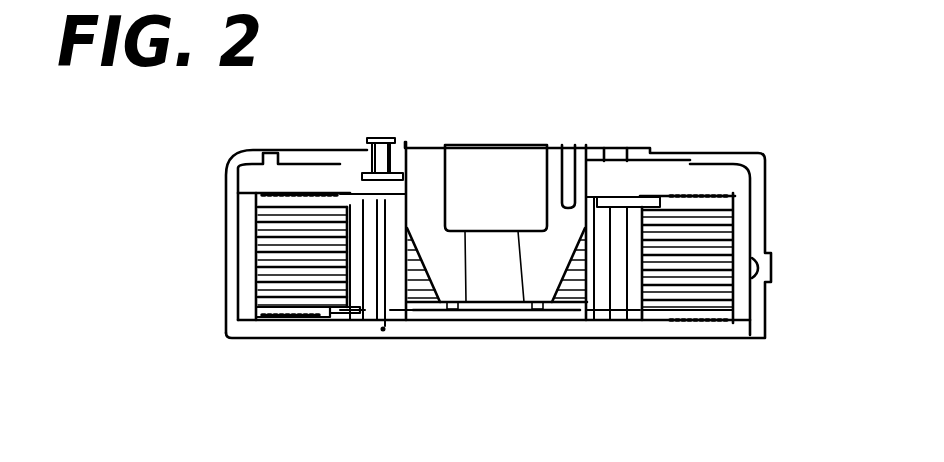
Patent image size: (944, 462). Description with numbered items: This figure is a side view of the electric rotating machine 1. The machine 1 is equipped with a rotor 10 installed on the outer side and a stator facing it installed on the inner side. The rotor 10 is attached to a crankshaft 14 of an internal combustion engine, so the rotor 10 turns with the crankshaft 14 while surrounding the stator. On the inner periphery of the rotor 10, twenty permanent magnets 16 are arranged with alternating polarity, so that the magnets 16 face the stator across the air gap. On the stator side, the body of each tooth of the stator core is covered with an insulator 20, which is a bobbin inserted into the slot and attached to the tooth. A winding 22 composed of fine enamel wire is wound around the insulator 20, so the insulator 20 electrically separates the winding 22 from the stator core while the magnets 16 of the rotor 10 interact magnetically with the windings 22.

The electric rotating machine 1 is at (692, 135).
The rotor 10 is at (207, 209).
The crankshaft 14 is at (496, 278).
The permanent magnets 16 is at (248, 263).
The insulator 20 is at (297, 310).
The winding 22 is at (695, 290).